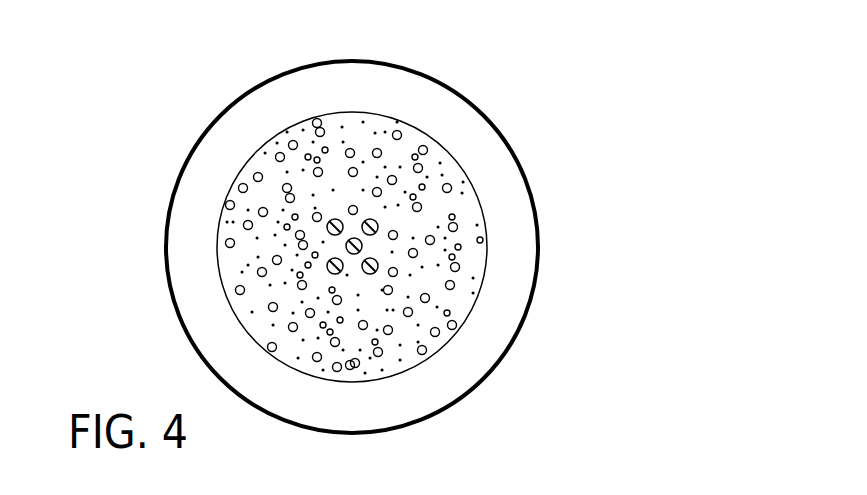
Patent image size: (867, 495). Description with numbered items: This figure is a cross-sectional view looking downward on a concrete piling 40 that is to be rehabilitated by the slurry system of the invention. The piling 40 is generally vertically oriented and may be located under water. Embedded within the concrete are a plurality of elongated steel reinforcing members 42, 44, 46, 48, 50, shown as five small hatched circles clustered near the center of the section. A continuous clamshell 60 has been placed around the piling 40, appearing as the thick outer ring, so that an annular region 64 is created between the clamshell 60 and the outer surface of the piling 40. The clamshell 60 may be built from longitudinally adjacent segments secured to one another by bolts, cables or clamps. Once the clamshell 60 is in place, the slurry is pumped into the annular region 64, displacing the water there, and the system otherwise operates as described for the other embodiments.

The piling 40 is at (425, 125).
The elongated steel reinforcing member 42 is at (327, 224).
The elongated steel reinforcing member 44 is at (378, 226).
The elongated steel reinforcing member 46 is at (346, 250).
The elongated steel reinforcing member 48 is at (378, 267).
The elongated steel reinforcing member 50 is at (328, 270).
The continuous clamshell 60 is at (508, 138).
The annular region 64 is at (508, 252).